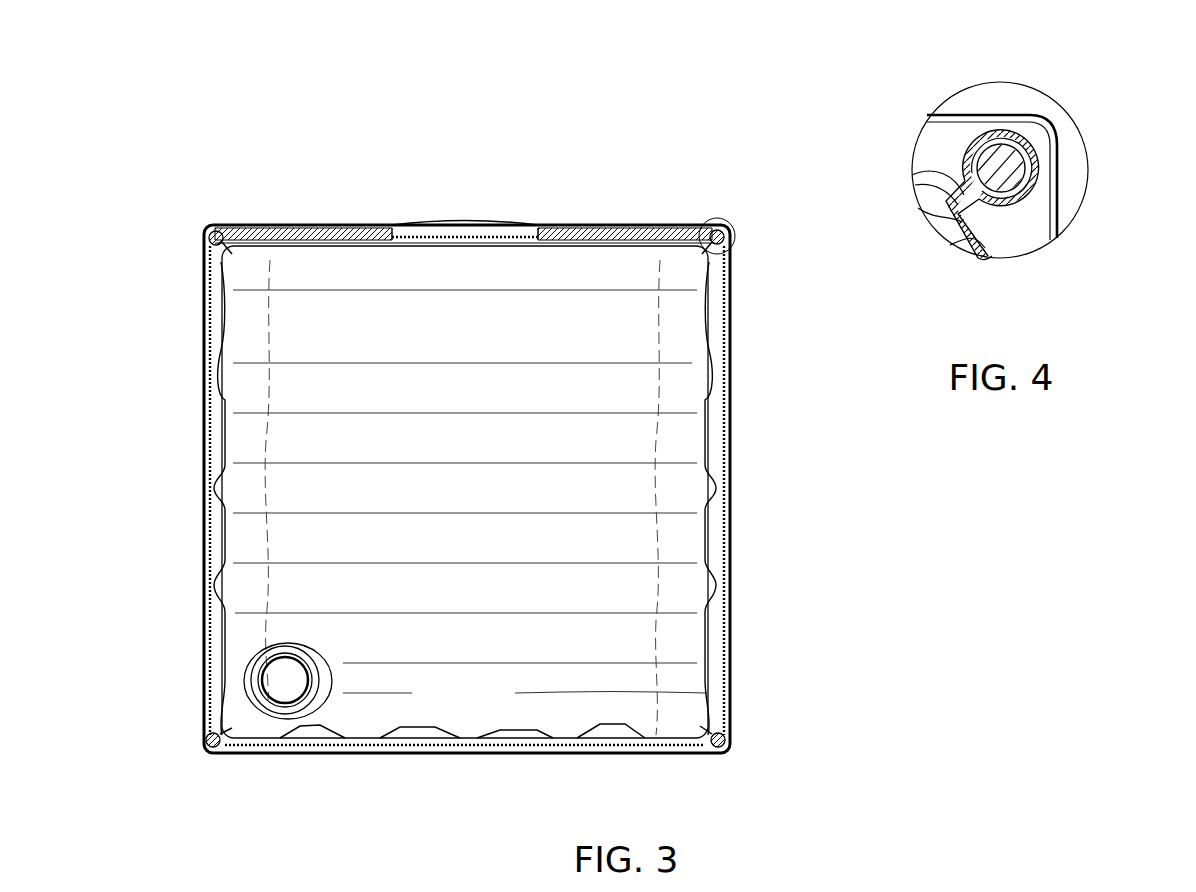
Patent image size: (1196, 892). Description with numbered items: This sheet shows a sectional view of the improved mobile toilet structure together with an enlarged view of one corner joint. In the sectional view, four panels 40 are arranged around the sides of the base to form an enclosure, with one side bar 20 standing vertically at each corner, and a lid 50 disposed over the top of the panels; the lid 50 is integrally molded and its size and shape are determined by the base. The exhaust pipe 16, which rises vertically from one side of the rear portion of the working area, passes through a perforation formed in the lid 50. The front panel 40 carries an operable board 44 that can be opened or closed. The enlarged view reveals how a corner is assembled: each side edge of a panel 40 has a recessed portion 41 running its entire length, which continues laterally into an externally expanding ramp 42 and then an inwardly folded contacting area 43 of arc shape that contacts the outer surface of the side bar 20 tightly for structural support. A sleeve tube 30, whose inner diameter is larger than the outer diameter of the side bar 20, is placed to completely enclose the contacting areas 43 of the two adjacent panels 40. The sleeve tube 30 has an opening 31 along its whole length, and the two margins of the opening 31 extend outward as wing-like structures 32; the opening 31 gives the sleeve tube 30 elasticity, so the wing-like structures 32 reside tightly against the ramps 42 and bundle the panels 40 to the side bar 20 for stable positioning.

In FIG. 3, the exhaust pipe 16 is at (280, 683).
In FIG. 4, the side bar 20 is at (1018, 186).
In FIG. 4, the sleeve tube 30 is at (1031, 142).
In FIG. 4, the opening 31 is at (950, 176).
In FIG. 4, the wing-like structures 32 is at (940, 212).
In FIG. 3, the panel 40 is at (578, 216).
In FIG. 3, the recessed portion 41 is at (228, 224).
In FIG. 4, the externally expanding ramp 42 is at (988, 260).
In FIG. 4, the inwardly folded contacting area 43 is at (1036, 158).
In FIG. 3, the operable board 44 is at (427, 226).
In FIG. 3, the lid 50 is at (683, 497).